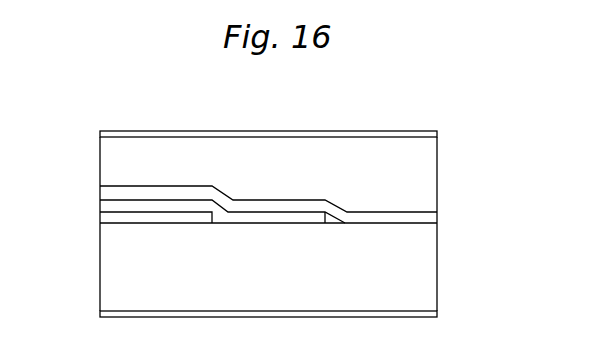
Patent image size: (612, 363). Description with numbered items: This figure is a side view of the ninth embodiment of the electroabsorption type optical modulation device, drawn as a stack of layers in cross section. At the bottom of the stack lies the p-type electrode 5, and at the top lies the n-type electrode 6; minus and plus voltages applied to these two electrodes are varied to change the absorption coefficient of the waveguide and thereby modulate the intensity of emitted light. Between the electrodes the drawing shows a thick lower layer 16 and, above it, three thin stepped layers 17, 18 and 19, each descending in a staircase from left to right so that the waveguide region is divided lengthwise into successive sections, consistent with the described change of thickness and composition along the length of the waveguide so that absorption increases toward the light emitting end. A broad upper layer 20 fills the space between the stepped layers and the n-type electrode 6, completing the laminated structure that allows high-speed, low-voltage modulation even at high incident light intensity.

The p-type electrode 5 is at (437, 315).
The n-type electrode 6 is at (437, 133).
The base layer 16 is at (437, 248).
The lower electrode 17 is at (100, 222).
The intermediate layer 18 is at (100, 208).
The upper layer 19 is at (102, 192).
The insulating layer 20 is at (100, 144).